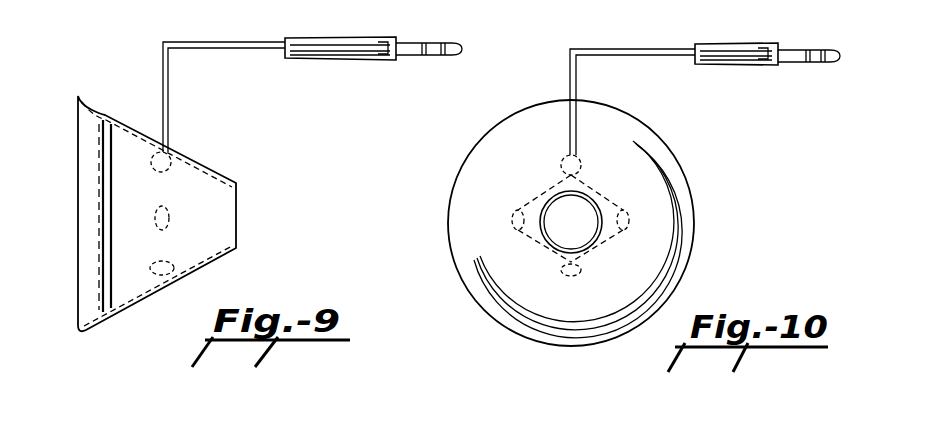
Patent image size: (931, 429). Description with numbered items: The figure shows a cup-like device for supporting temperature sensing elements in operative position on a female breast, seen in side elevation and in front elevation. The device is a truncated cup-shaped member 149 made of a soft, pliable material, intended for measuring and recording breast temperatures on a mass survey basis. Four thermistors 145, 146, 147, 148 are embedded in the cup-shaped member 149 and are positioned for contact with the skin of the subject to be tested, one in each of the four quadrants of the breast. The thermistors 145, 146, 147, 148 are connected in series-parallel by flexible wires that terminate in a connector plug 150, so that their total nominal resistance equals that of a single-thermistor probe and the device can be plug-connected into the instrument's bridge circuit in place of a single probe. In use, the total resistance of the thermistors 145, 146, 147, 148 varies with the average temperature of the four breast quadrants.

In FIG. 9, the thermistor 145 is at (172, 160).
In FIG. 10, the thermistor 145 is at (578, 160).
In FIG. 9, the thermistor 146 is at (168, 226).
In FIG. 10, the thermistor 146 is at (512, 222).
In FIG. 9, the thermistor 147 is at (158, 276).
In FIG. 10, the thermistor 147 is at (567, 276).
In FIG. 10, the thermistor 148 is at (629, 220).
In FIG. 9, the cup-shaped member 149 is at (78, 157).
In FIG. 10, the cup-shaped member 149 is at (675, 256).
In FIG. 9, the connector plug 150 is at (310, 38).
In FIG. 10, the connector plug 150 is at (710, 43).